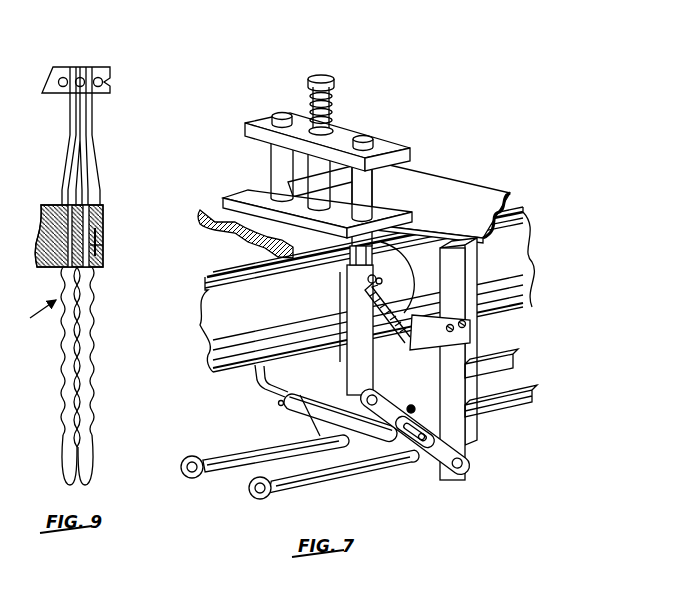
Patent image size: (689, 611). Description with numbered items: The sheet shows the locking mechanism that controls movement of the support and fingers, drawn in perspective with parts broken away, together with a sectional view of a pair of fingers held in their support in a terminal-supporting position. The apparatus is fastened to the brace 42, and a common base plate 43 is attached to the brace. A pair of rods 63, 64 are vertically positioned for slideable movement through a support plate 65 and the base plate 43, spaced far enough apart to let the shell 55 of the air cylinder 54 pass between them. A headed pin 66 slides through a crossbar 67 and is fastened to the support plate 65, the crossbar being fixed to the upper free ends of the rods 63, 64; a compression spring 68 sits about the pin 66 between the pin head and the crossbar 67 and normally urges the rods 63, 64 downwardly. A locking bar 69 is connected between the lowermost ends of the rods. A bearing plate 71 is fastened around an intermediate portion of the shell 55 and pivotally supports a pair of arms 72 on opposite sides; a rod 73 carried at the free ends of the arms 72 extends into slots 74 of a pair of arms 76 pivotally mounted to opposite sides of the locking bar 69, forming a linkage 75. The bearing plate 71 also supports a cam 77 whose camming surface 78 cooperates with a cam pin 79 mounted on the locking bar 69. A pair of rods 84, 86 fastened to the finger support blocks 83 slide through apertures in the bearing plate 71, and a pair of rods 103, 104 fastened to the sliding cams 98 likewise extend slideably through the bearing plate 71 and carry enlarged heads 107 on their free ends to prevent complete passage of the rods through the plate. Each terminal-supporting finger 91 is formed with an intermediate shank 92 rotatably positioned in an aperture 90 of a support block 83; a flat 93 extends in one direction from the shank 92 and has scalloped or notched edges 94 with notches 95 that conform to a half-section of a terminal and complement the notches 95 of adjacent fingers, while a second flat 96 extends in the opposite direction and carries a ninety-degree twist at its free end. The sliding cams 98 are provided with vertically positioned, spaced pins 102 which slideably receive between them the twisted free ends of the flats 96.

In FIG. 7, the brace 42 is at (468, 187).
In FIG. 7, the common base plate 43 is at (202, 210).
In FIG. 7, the air cylinder 54 is at (243, 267).
In FIG. 7, the shell 55 is at (220, 272).
In FIG. 7, the rod 63 is at (268, 170).
In FIG. 7, the rod 64 is at (373, 197).
In FIG. 7, the support plate 65 is at (236, 193).
In FIG. 7, the headed pin 66 is at (328, 74).
In FIG. 7, the crossbar 67 is at (388, 147).
In FIG. 7, the compression spring 68 is at (335, 114).
In FIG. 7, the locking bar 69 is at (278, 393).
In FIG. 7, the bearing plate 71 is at (442, 478).
In FIG. 7, the arms 72 is at (312, 420).
In FIG. 7, the rod 73 is at (384, 433).
In FIG. 7, the slots 74 is at (409, 406).
In FIG. 7, the linkage 75 is at (421, 463).
In FIG. 7, the arms 76 is at (374, 391).
In FIG. 7, the cam 77 is at (448, 326).
In FIG. 7, the camming surface 78 is at (408, 302).
In FIG. 7, the cam pin 79 is at (378, 279).
In FIG. 7, the rod 84 is at (472, 366).
In FIG. 7, the rod 86 is at (519, 392).
In FIG. 7, the rod 103 is at (246, 452).
In FIG. 7, the rod 104 is at (333, 478).
In FIG. 7, the enlarged heads 107 is at (197, 476).
In FIG. 9, the finger support blocks 83 is at (39, 241).
In FIG. 9, the apertures 90 is at (98, 256).
In FIG. 9, the terminal-supporting fingers 91 is at (34, 313).
In FIG. 9, the intermediate shank 92 is at (96, 237).
In FIG. 9, the flat 93 is at (62, 436).
In FIG. 9, the notched edges 94 is at (62, 382).
In FIG. 9, the notches 95 is at (62, 345).
In FIG. 9, the flat 96 is at (72, 110).
In FIG. 9, the sliding cams 98 is at (62, 66).
In FIG. 9, the pins 102 is at (108, 81).